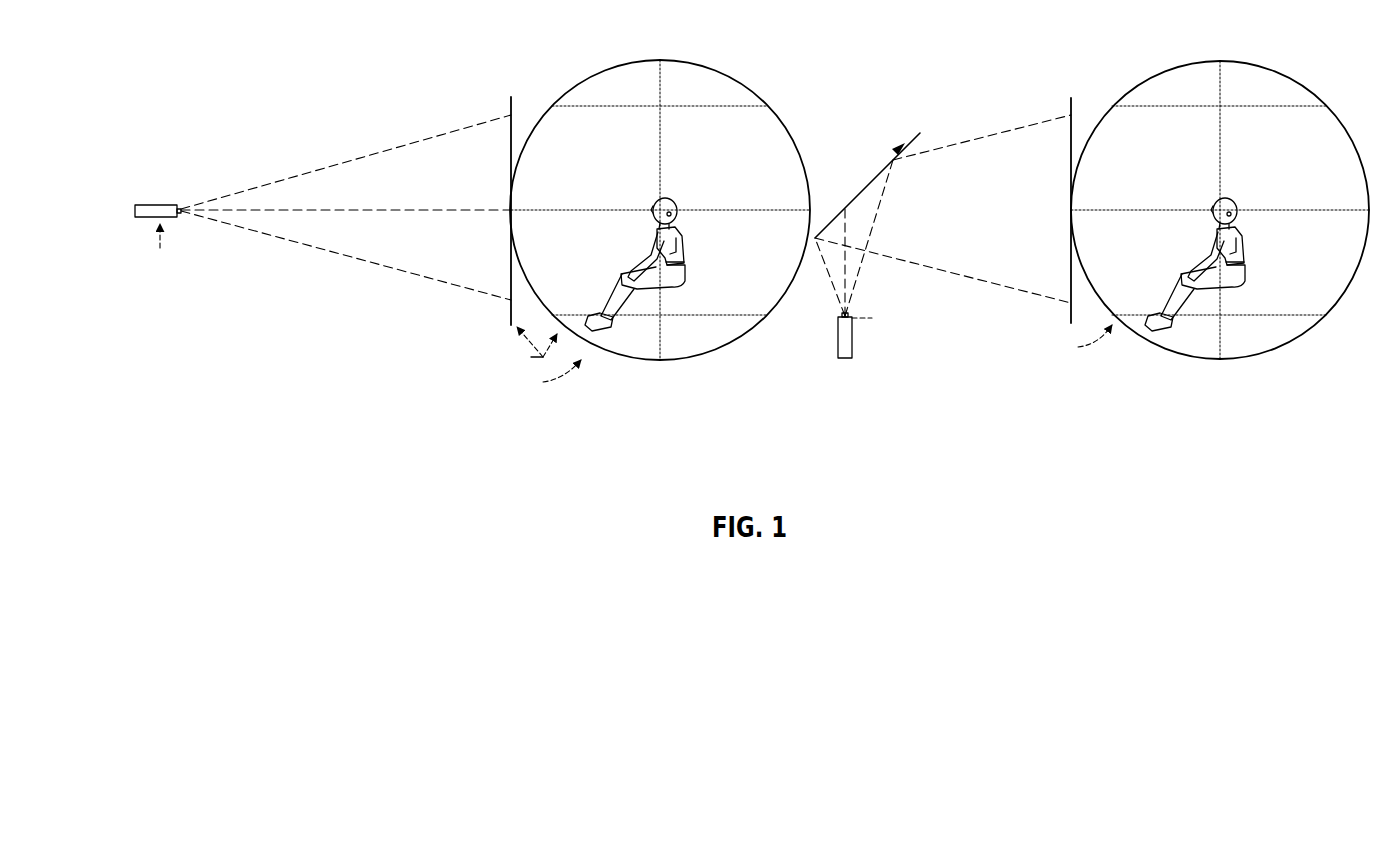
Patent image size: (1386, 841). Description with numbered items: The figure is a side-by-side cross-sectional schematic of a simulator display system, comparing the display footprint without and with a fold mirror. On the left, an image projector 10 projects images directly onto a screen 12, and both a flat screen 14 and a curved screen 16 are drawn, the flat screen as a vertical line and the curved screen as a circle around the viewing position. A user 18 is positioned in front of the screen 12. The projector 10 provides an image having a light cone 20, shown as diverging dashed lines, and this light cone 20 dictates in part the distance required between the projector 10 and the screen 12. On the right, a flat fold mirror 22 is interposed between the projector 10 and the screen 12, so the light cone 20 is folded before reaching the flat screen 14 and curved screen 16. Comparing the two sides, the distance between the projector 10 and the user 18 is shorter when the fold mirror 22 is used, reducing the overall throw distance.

The image projector 10 is at (157, 204).
The screen 12 is at (547, 377).
The flat screen 14 is at (510, 282).
The curved screen 16 is at (538, 118).
The user 18 is at (683, 234).
The light cone 20 is at (276, 181).
The flat fold mirror 22 is at (857, 196).